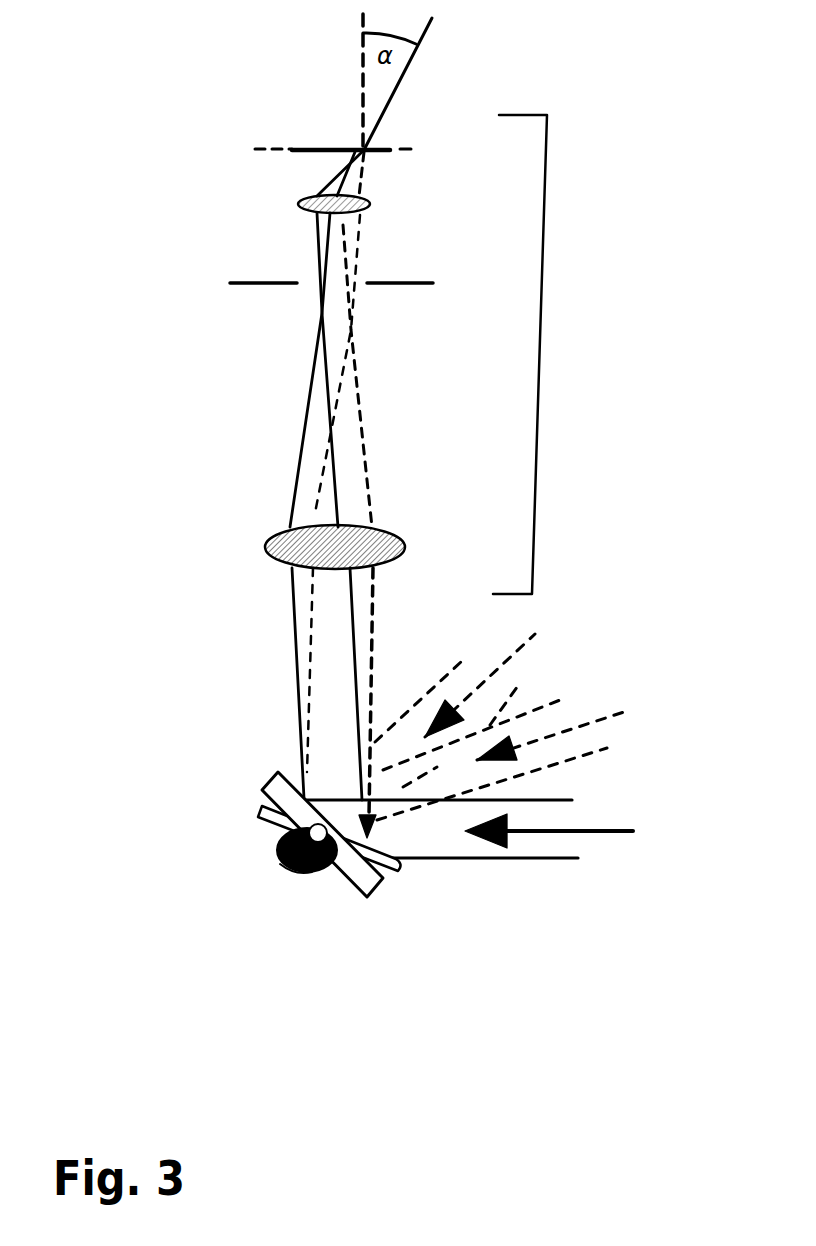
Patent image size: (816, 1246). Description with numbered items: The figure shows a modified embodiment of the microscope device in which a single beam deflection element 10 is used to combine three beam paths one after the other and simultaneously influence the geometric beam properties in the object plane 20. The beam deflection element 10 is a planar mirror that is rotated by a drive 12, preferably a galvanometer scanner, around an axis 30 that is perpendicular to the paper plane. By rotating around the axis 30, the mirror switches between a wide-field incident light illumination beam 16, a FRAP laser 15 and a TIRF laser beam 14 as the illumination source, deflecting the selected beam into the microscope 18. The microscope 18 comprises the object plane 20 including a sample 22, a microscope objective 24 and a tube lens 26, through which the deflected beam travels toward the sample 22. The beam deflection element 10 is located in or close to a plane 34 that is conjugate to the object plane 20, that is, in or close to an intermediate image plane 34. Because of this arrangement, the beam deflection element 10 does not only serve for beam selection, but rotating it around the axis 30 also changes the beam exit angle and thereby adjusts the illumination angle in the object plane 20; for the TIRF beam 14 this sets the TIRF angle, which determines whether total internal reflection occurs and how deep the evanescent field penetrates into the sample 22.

The beam deflection element 10 is at (263, 777).
The drive 12 is at (277, 863).
The laser beam 14 is at (579, 833).
The FRAP laser 15 is at (533, 753).
The illumination beam 16 is at (475, 696).
The microscope 18 is at (548, 354).
The object plane 20 is at (247, 147).
The sample 22 is at (335, 145).
The microscope objective 24 is at (377, 203).
The tube lens 26 is at (406, 550).
The axis 30 is at (262, 802).
The intermediate image plane 34 is at (300, 833).